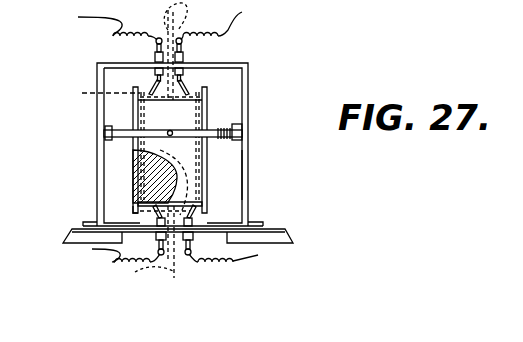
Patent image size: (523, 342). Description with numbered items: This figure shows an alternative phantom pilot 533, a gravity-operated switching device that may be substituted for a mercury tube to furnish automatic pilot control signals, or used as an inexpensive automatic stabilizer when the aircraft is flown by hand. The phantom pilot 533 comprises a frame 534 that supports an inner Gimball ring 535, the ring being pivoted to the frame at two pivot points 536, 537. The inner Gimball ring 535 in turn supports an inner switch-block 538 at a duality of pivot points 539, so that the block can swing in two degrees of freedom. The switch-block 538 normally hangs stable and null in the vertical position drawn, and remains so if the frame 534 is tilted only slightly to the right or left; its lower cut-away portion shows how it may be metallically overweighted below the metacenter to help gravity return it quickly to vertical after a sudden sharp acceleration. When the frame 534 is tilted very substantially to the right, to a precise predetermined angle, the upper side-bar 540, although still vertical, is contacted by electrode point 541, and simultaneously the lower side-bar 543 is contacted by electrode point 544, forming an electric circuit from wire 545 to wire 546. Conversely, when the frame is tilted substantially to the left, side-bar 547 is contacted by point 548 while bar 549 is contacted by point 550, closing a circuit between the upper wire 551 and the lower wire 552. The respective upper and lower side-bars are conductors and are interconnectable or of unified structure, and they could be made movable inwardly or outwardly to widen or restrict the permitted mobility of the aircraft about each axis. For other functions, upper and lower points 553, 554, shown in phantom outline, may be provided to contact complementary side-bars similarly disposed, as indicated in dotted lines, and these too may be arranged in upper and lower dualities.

The phantom pilot 533 is at (252, 72).
The frame 534 is at (250, 176).
The inner Gimball ring 535 is at (190, 116).
The pivot point 536 is at (243, 126).
The pivot point 537 is at (104, 130).
The inner switch-block 538 is at (208, 157).
The pivot points 539 is at (134, 152).
The upper side-bar 540 is at (137, 92).
The electrode point 541 is at (156, 92).
The lower side-bar 543 is at (208, 203).
The electrode point 544 is at (212, 221).
The wire 545 is at (97, 21).
The wire 546 is at (220, 266).
The side-bar 547 is at (208, 93).
The electrode point 548 is at (190, 88).
The side-bar 549 is at (134, 203).
The electrode point 550 is at (155, 221).
The upper wire 551 is at (226, 22).
The lower wire 552 is at (101, 256).
The upper point 553 is at (88, 96).
The lower point 554 is at (208, 157).